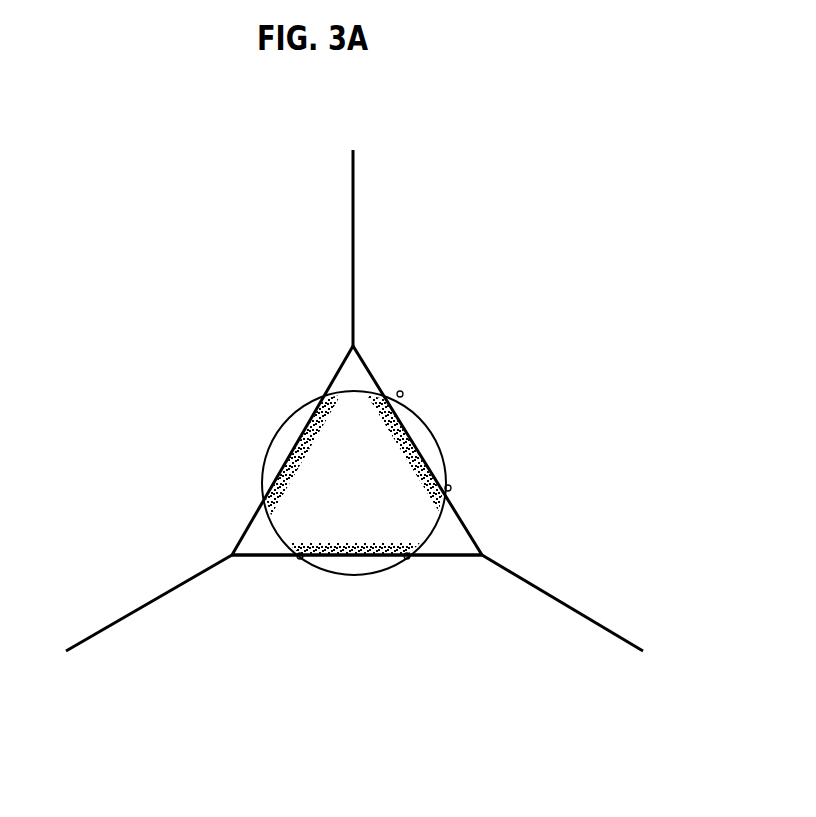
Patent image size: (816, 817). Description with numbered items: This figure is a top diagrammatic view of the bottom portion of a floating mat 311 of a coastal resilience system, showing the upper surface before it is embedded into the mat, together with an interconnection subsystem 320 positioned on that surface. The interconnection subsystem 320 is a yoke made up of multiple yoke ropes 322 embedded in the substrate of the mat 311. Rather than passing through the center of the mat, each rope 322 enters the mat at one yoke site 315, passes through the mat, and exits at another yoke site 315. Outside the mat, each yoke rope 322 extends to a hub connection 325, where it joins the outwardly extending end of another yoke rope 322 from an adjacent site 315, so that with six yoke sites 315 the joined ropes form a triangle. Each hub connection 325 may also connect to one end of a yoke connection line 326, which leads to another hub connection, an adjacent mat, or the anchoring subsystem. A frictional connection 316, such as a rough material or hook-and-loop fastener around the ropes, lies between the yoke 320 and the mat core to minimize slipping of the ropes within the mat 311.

The interconnection subsystem 320 is at (351, 280).
The yoke ropes 322 is at (335, 378).
The hub connection 325 is at (479, 558).
The yoke connection line 326 is at (540, 583).
The floating mat 311 is at (302, 523).
The frictional connection 316 is at (295, 447).
The yoke sites 315 is at (448, 488).